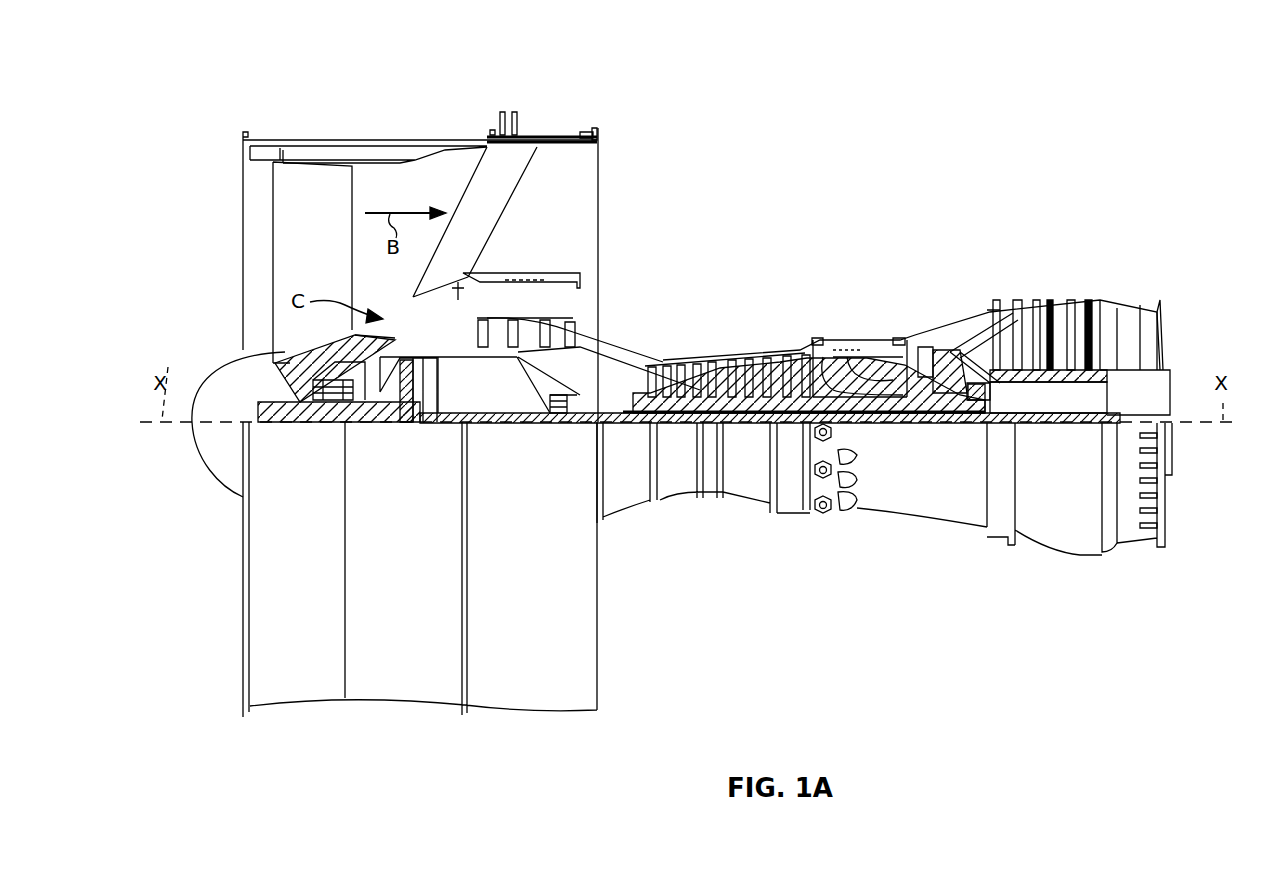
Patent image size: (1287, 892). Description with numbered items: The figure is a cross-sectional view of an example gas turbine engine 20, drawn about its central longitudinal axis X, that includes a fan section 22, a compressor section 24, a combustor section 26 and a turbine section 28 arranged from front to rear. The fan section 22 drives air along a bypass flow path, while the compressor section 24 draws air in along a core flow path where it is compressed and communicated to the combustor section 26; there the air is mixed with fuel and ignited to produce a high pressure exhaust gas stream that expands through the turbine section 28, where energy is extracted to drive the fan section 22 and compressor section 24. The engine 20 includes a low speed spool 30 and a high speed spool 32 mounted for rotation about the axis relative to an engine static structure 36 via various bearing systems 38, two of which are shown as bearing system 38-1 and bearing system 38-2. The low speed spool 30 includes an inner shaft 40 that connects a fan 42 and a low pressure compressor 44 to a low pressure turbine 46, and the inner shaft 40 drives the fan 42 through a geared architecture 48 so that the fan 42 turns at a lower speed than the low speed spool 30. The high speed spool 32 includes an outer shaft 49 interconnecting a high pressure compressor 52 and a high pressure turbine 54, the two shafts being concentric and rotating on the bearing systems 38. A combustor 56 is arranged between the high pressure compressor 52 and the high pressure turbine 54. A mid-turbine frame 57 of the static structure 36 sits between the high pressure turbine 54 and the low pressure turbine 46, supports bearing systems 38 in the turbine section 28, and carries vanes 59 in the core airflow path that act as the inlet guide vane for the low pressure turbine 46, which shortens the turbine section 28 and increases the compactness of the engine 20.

The gas turbine engine 20 is at (908, 170).
The fan section 22 is at (240, 121).
The compressor section 24 is at (470, 243).
The combustor section 26 is at (812, 243).
The turbine section 28 is at (1108, 243).
The low speed spool 30 is at (755, 440).
The high speed spool 32 is at (793, 397).
The engine static structure 36 is at (222, 722).
The bearing systems 38 is at (963, 423).
The bearing system 38-1 is at (322, 427).
The bearing system 38-2 is at (557, 427).
The inner shaft 40 is at (618, 426).
The fan 42 is at (320, 253).
The low pressure compressor 44 is at (535, 333).
The low pressure turbine 46 is at (1043, 323).
The geared architecture 48 is at (430, 442).
The outer shaft 49 is at (855, 406).
The high pressure compressor 52 is at (735, 397).
The high pressure turbine 54 is at (925, 347).
The combustor 56 is at (858, 367).
The mid-turbine frame 57 is at (963, 360).
The vanes 59 is at (985, 365).